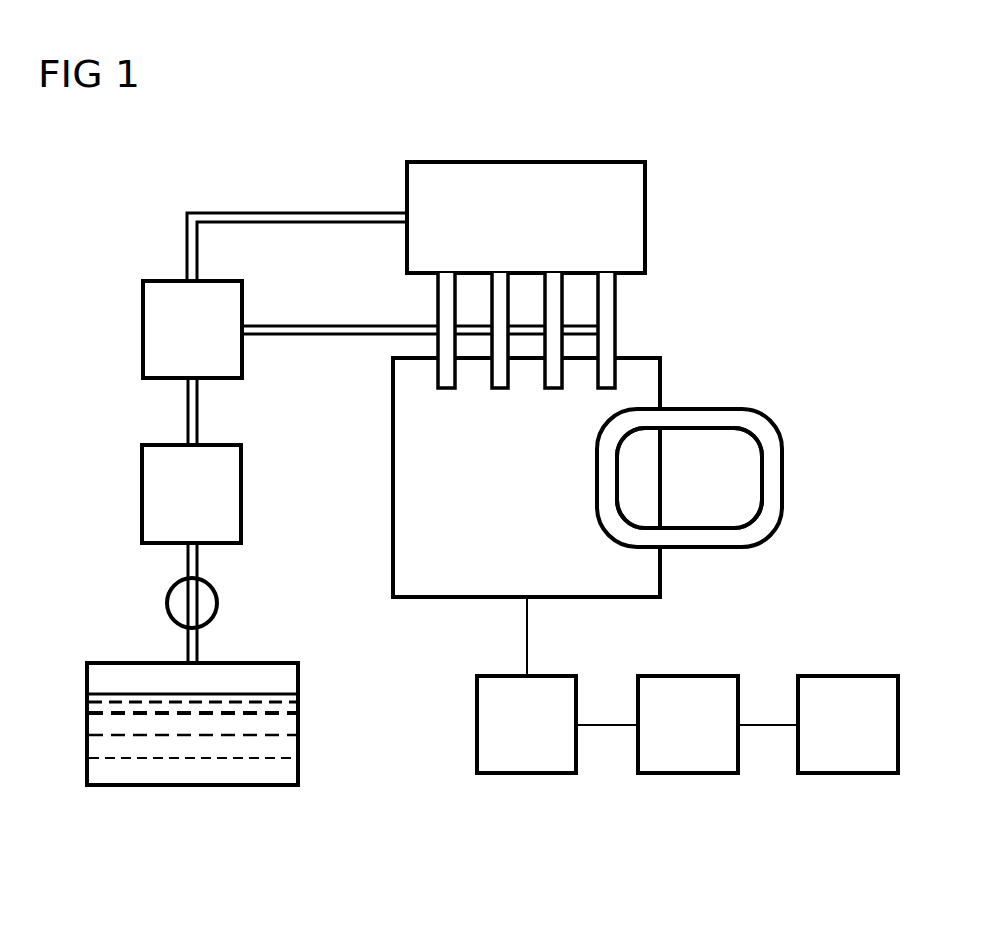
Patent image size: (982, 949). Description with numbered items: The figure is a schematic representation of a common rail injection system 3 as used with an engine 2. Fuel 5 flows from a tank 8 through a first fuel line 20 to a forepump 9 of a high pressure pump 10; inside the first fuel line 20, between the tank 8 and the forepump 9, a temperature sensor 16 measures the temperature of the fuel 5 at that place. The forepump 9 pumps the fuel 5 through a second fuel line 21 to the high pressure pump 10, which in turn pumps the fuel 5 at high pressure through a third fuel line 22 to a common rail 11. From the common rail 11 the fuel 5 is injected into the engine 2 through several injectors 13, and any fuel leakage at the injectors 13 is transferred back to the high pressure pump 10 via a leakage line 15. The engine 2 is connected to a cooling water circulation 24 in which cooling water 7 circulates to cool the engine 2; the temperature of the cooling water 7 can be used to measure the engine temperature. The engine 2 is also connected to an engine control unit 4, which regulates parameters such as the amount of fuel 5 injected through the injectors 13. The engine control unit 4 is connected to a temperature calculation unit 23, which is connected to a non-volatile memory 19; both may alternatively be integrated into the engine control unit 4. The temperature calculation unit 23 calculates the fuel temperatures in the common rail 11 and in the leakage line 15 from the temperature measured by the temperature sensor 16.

The engine 2 is at (393, 477).
The common rail injection system 3 is at (793, 182).
The engine control unit 4 is at (527, 773).
The fuel 5 is at (95, 750).
The cooling water 7 is at (696, 547).
The tank 8 is at (192, 785).
The forepump 9 is at (142, 494).
The high pressure pump 10 is at (143, 329).
The common rail 11 is at (525, 162).
The injectors 13 is at (498, 280).
The leakage line 15 is at (310, 326).
The temperature sensor 16 is at (167, 603).
The non-volatile memory 19 is at (848, 773).
The first fuel line 20 is at (198, 645).
The second fuel line 21 is at (195, 412).
The third fuel line 22 is at (240, 213).
The temperature calculation unit 23 is at (688, 773).
The cooling water circulation 24 is at (690, 409).